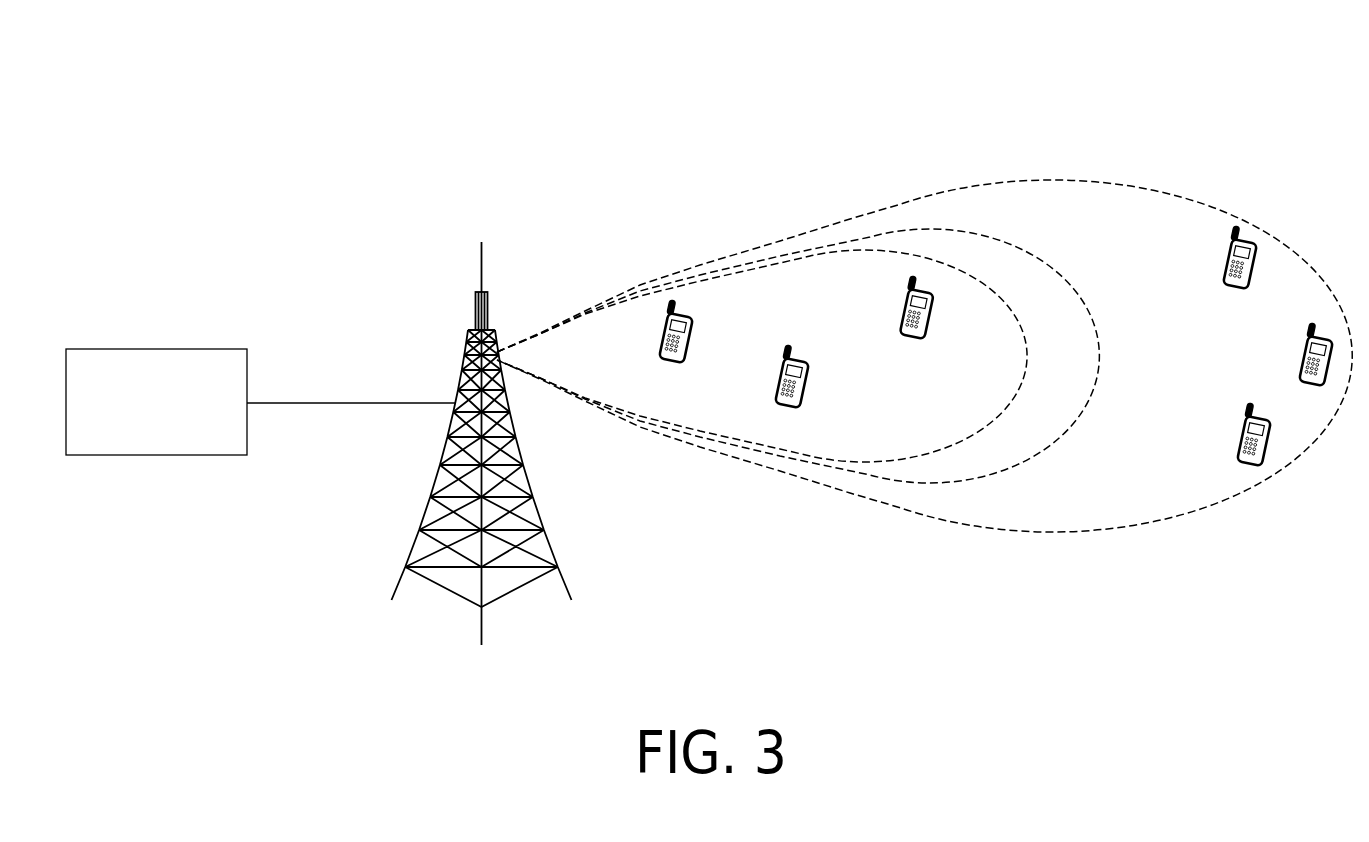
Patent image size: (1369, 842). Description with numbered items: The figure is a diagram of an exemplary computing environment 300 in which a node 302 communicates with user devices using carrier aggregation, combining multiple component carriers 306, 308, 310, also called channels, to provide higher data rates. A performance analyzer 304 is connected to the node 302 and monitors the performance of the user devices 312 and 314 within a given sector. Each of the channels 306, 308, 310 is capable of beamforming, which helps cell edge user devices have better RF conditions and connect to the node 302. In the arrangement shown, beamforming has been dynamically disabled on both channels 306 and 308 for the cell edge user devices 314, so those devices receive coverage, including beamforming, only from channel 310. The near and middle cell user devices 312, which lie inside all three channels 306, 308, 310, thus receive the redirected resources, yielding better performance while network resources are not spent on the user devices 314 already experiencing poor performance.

The computing environment 300 is at (114, 112).
The node 302 is at (462, 353).
The performance analyzer 304 is at (151, 349).
The component carrier 306 is at (833, 250).
The component carrier 308 is at (890, 230).
The component carrier 310 is at (931, 192).
The user devices 312 is at (693, 332).
The user devices 314 is at (1222, 253).